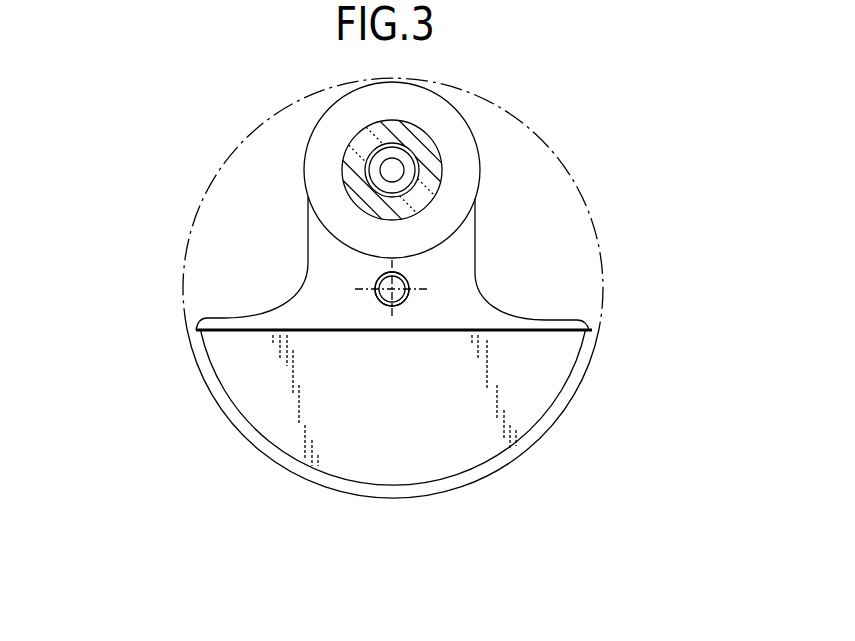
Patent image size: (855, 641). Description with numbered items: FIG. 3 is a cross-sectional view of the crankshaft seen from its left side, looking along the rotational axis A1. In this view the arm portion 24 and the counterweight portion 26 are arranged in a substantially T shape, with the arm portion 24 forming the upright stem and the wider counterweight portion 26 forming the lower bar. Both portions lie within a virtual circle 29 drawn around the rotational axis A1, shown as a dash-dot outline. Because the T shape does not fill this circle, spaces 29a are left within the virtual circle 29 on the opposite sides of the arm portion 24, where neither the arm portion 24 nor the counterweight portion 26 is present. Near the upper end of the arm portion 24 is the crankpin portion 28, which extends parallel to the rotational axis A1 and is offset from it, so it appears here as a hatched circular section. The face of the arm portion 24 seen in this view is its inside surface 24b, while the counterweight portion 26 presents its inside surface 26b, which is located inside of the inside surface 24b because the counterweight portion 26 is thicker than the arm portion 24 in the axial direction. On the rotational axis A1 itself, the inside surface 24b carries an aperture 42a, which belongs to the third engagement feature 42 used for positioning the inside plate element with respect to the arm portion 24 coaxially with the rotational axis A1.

The virtual circle 29 is at (557, 152).
The spaces 29a is at (255, 218).
The crankpin portion 28 is at (436, 142).
The arm portion 24 is at (478, 274).
The inside surface 24b is at (450, 267).
The counterweight portion 26 is at (568, 405).
The inside surface 26b is at (445, 420).
The aperture 42a is at (378, 283).
The third engagement feature 42 is at (392, 289).
The rotational axis A1 is at (375, 305).